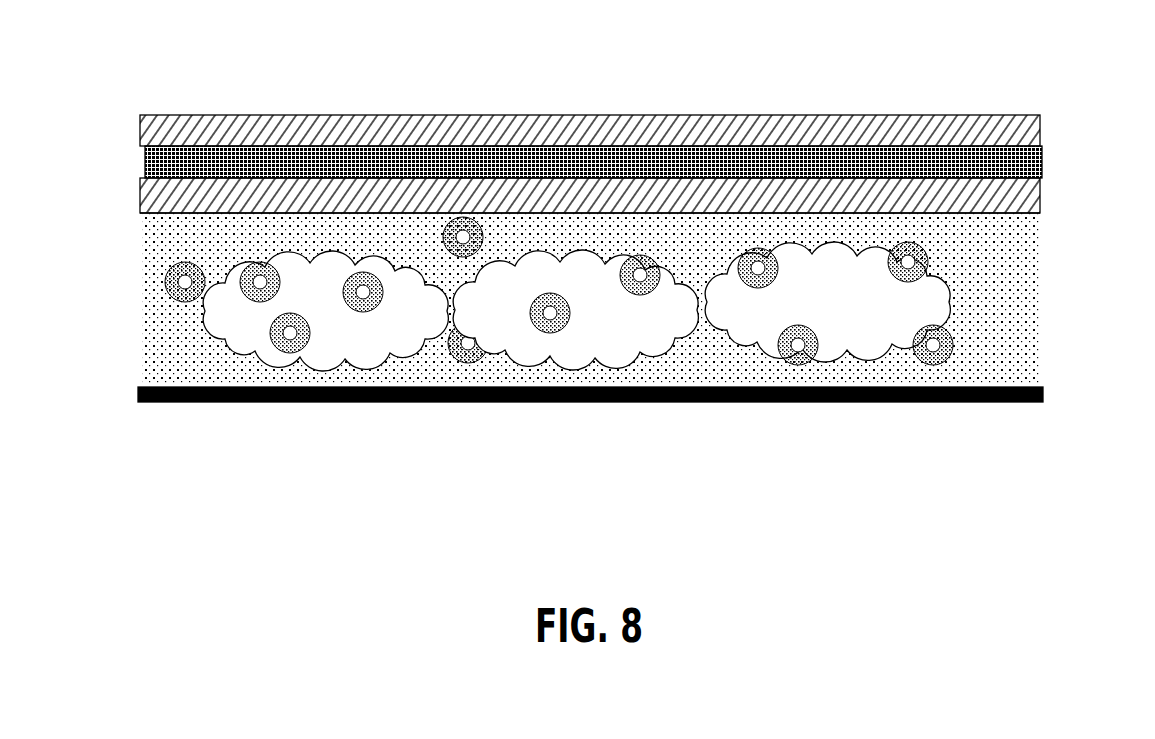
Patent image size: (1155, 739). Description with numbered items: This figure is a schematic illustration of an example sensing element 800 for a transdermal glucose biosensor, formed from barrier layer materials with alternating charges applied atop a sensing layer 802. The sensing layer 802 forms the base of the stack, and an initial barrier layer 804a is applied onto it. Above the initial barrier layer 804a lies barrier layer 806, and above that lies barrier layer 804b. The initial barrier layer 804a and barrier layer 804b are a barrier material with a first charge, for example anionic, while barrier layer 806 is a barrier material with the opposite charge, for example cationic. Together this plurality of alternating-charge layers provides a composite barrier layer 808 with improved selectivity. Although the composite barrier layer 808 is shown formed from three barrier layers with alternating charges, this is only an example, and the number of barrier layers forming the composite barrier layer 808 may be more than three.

The sensing element 800 is at (593, 214).
The sensing layer 802 is at (1055, 220).
The initial barrier layer 804a is at (148, 198).
The barrier layer 804b is at (154, 131).
The barrier layer 806 is at (147, 166).
The composite barrier layer 808 is at (590, 167).